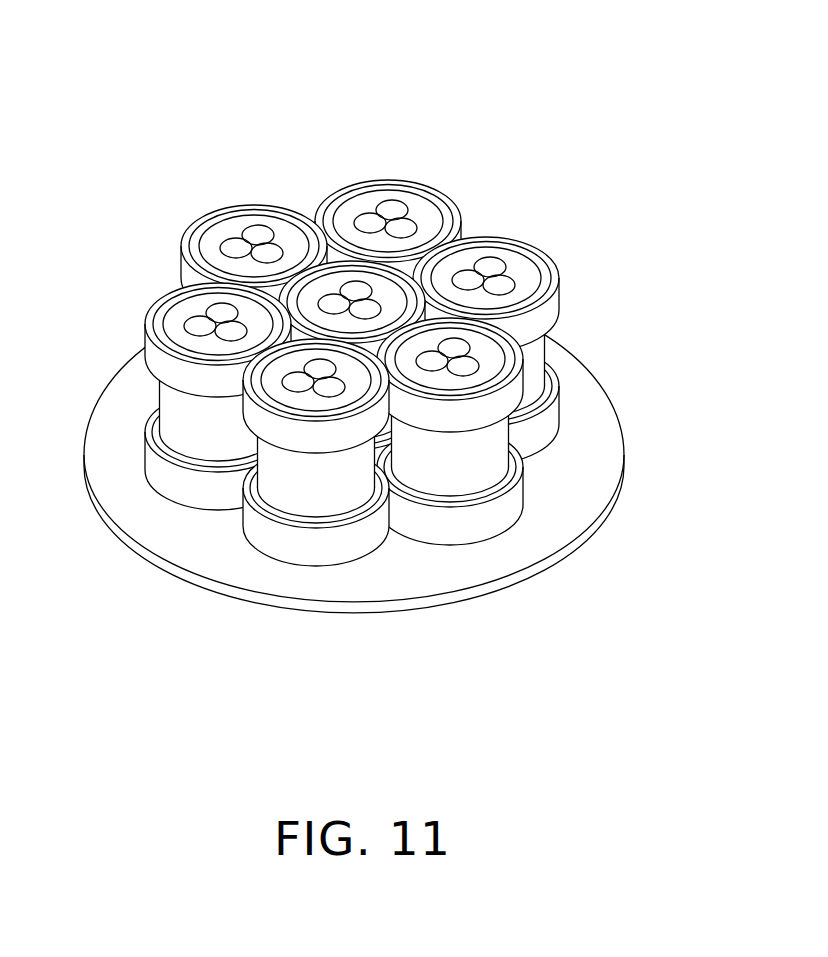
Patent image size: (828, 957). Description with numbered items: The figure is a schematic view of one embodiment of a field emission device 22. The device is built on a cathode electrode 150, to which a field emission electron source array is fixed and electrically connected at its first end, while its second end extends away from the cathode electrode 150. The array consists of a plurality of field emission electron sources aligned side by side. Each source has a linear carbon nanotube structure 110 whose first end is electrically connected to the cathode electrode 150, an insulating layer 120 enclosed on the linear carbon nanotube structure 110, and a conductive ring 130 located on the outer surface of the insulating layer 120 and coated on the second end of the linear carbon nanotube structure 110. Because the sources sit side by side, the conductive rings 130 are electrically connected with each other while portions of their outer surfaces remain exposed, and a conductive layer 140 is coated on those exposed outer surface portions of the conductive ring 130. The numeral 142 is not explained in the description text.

The field emission device 22 is at (266, 100).
The linear carbon nanotube structure 110 is at (373, 187).
The insulating layer 120 is at (364, 205).
The conductive ring 130 is at (510, 280).
The conductive layer 140 is at (552, 279).
The base flange 142 is at (527, 518).
The cathode electrode 150 is at (587, 412).